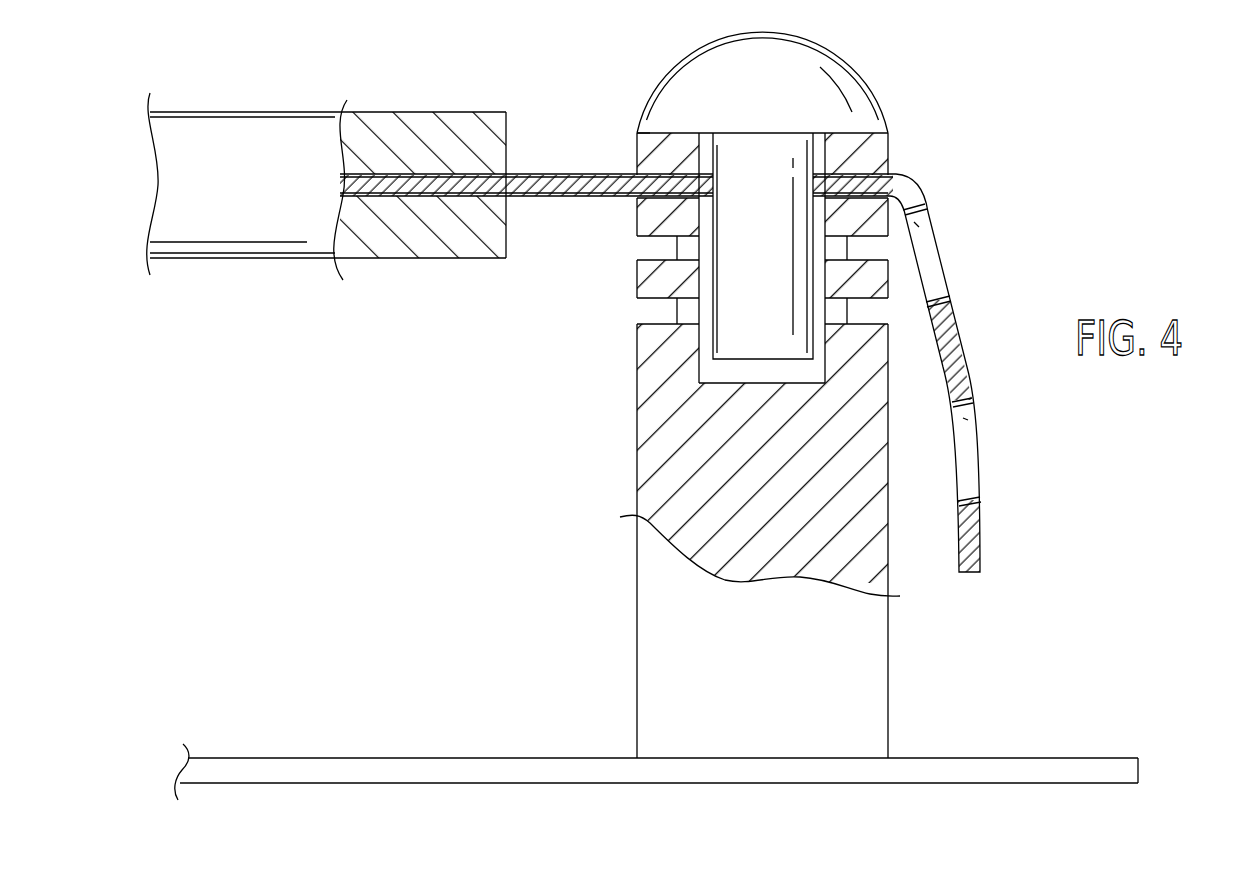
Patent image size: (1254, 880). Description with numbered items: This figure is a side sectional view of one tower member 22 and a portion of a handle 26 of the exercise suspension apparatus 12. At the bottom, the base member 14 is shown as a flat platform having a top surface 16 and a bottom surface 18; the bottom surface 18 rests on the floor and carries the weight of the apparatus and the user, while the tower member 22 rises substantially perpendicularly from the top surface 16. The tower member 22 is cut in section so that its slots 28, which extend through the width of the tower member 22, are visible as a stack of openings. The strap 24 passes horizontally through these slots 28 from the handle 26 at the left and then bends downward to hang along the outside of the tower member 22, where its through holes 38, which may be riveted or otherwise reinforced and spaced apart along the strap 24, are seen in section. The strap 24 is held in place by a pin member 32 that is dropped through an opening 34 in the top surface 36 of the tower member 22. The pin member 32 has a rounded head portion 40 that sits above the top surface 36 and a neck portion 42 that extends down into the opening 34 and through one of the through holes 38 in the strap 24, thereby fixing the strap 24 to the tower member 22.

The exercise suspension apparatus 12 is at (1133, 82).
The base member 14 is at (1145, 765).
The top surface 16 is at (1110, 758).
The bottom surface 18 is at (1118, 784).
The tower member 22 is at (778, 681).
The strap 24 is at (562, 163).
The handle 26 is at (240, 123).
The slots 28 is at (633, 202).
The pin member 32 is at (872, 52).
The opening 34 is at (823, 132).
The top surface 36 is at (672, 131).
The through holes 38 is at (948, 245).
The head portion 40 is at (776, 103).
The neck portion 42 is at (776, 245).